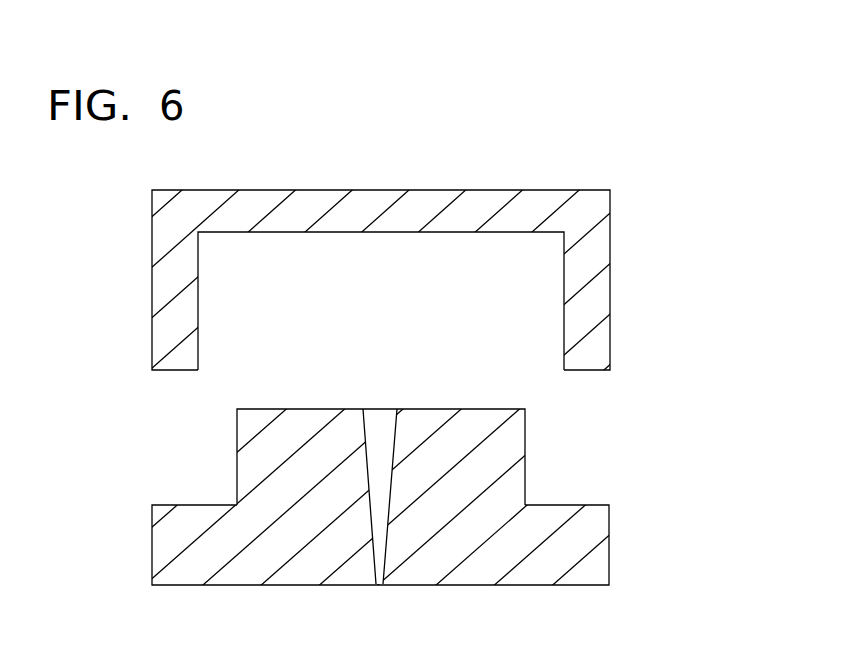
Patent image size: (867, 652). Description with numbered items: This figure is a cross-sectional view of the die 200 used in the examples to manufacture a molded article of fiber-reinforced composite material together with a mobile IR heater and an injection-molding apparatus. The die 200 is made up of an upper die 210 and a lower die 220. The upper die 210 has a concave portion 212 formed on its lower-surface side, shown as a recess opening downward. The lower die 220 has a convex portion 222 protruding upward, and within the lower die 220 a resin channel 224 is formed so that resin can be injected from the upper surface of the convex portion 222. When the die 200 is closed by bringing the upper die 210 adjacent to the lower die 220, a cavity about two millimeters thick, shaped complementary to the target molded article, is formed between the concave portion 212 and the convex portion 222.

The die 200 is at (610, 162).
The upper die 210 is at (612, 232).
The concave portion 212 is at (462, 233).
The lower die 220 is at (611, 560).
The convex portion 222 is at (527, 438).
The resin channel 224 is at (367, 427).